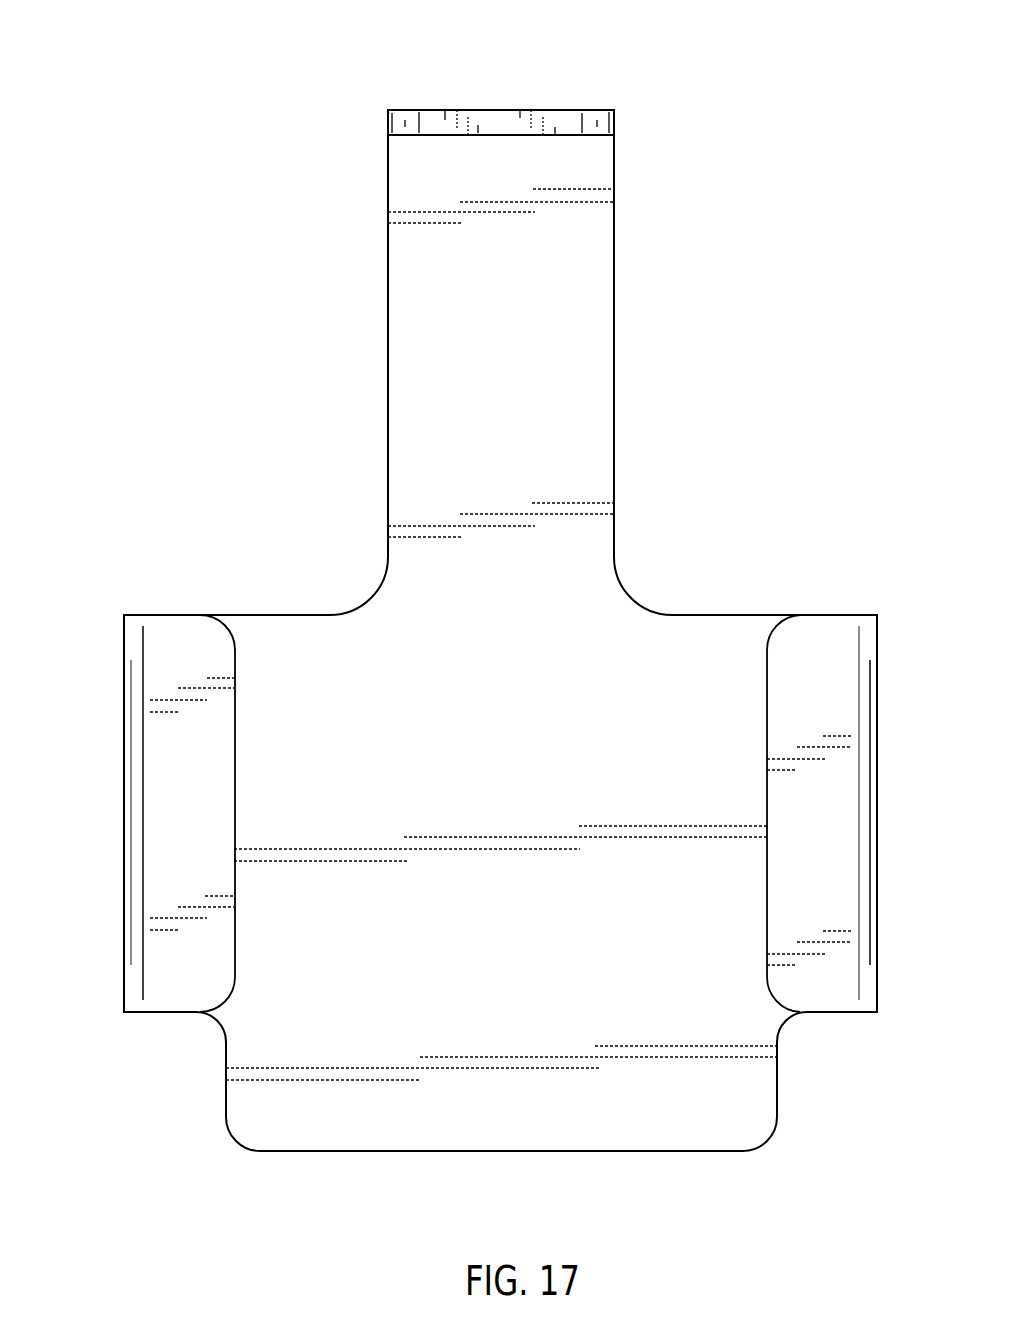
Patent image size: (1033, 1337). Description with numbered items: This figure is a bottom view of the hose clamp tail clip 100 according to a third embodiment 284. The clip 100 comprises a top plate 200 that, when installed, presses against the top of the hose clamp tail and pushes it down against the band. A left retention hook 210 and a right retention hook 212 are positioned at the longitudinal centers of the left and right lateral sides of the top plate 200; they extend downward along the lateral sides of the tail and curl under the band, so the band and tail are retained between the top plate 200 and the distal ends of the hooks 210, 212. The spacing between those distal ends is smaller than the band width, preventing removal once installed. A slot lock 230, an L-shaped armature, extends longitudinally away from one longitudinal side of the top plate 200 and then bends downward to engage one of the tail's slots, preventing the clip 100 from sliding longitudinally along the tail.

The hose clamp tail clip 100 is at (112, 94).
The third embodiment 284 is at (490, 616).
The top plate 200 is at (719, 1132).
The left retention hook 210 is at (138, 797).
The right retention hook 212 is at (866, 818).
The slot lock 230 is at (563, 117).